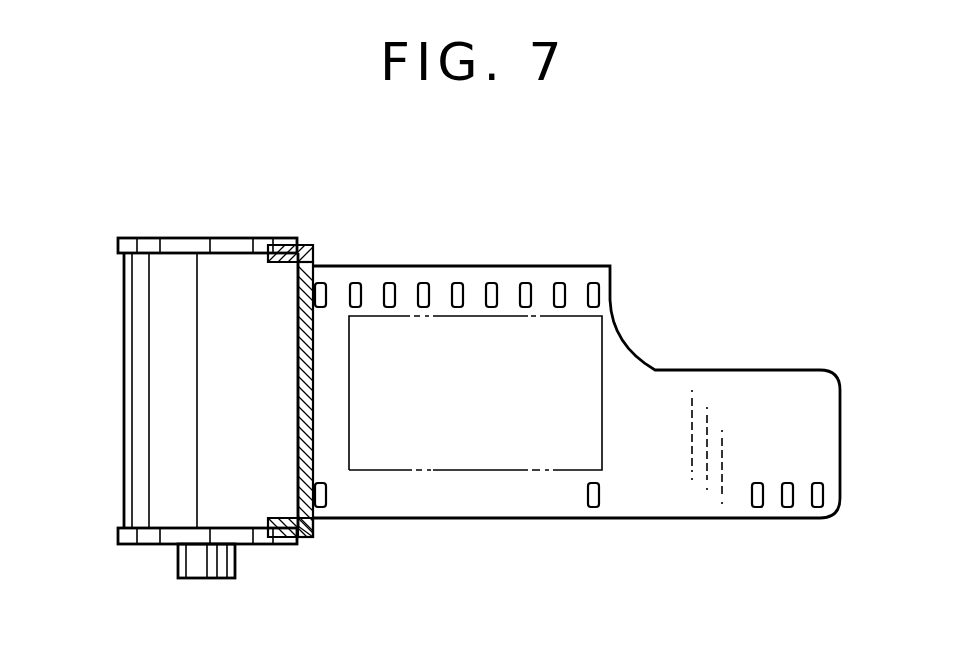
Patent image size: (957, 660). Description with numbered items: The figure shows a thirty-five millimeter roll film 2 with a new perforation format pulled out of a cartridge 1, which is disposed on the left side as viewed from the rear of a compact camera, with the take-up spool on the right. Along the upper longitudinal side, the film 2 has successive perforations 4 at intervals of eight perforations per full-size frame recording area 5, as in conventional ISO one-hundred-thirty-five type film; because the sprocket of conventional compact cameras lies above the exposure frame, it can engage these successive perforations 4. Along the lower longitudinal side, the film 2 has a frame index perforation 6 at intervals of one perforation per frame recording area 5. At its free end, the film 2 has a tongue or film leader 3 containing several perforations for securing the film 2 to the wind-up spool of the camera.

The cartridge 1 is at (122, 333).
The film 2 is at (613, 252).
The film leader 3 is at (765, 380).
The successive perforations 4 is at (610, 262).
The full-size frame recording area 5 is at (602, 358).
The frame index perforation 6 is at (583, 497).